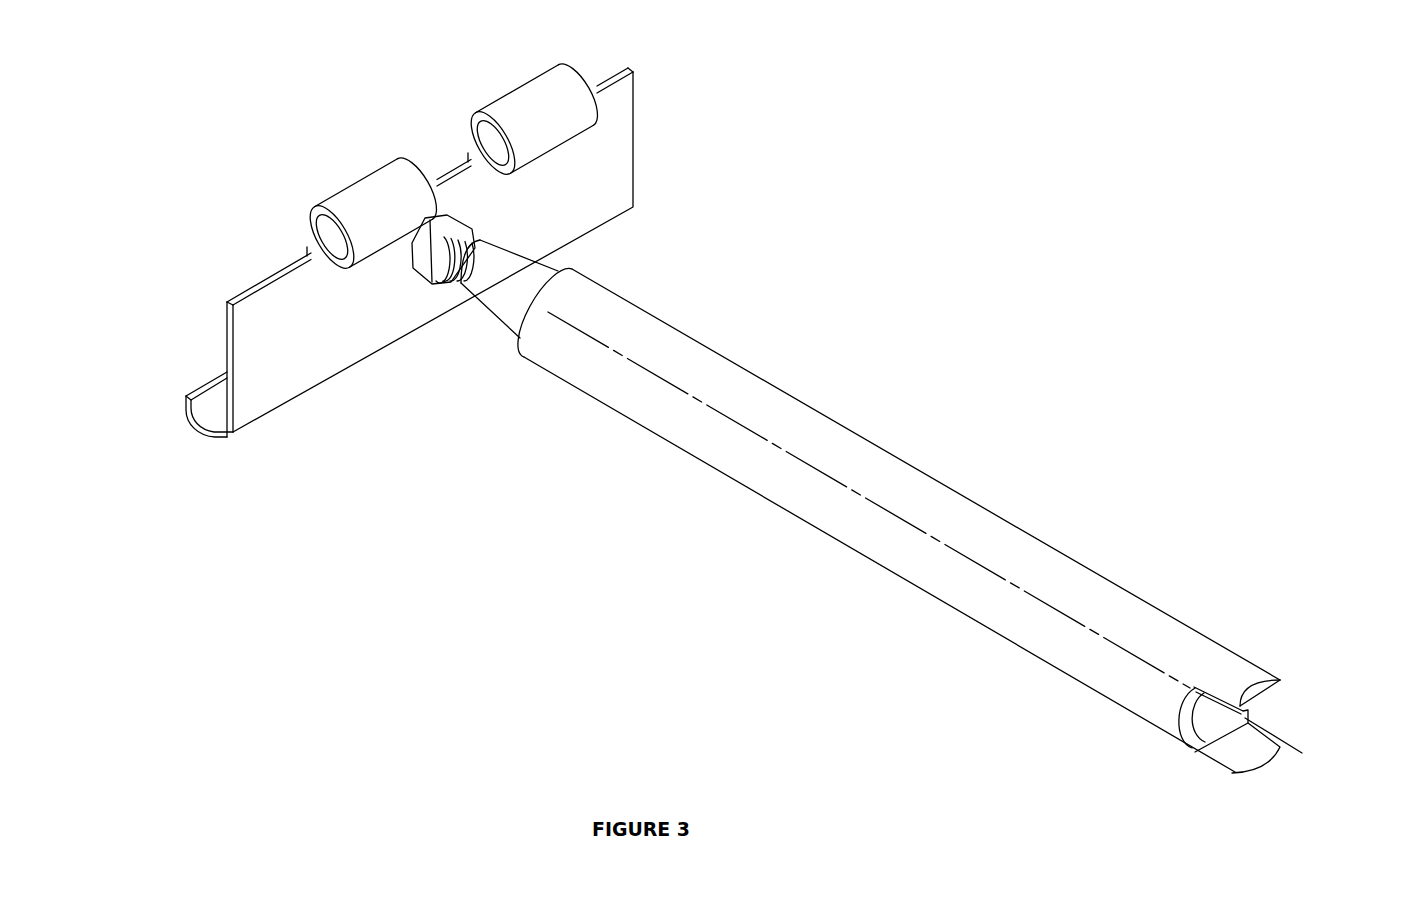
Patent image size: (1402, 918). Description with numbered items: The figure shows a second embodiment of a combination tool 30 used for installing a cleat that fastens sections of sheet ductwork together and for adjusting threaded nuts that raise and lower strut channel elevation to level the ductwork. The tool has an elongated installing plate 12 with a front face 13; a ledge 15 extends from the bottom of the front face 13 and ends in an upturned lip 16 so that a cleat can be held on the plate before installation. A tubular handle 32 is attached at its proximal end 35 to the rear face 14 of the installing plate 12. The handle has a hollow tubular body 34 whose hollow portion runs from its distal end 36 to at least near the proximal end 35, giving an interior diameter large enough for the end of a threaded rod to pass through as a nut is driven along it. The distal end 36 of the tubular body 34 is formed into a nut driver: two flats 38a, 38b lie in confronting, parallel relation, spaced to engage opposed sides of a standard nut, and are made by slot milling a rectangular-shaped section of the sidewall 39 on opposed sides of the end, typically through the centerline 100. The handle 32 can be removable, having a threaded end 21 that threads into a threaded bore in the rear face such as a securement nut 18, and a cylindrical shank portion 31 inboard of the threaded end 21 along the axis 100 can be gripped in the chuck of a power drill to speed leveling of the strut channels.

The installing plate 12 is at (227, 354).
The front face 13 is at (227, 302).
The rear face 14 is at (298, 328).
The ledge 15 is at (220, 420).
The upturned lip 16 is at (190, 394).
The securement nut 18 is at (455, 222).
The threaded end 21 is at (452, 222).
The combination tool 30 is at (733, 196).
The shank portion 31 is at (497, 300).
The tubular handle 32 is at (752, 393).
The hollow tubular body 34 is at (1100, 675).
The proximal end 35 is at (548, 268).
The distal end 36 is at (1233, 655).
The flat 38a is at (1185, 745).
The flat 38b is at (1226, 755).
The rectangular-shaped section of the sidewall 39 is at (1250, 721).
The centerline 100 is at (1298, 753).